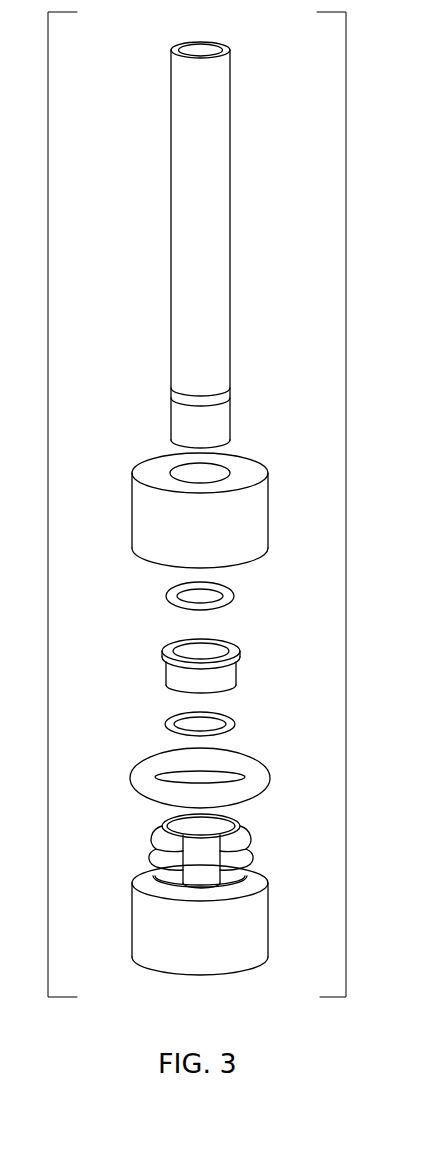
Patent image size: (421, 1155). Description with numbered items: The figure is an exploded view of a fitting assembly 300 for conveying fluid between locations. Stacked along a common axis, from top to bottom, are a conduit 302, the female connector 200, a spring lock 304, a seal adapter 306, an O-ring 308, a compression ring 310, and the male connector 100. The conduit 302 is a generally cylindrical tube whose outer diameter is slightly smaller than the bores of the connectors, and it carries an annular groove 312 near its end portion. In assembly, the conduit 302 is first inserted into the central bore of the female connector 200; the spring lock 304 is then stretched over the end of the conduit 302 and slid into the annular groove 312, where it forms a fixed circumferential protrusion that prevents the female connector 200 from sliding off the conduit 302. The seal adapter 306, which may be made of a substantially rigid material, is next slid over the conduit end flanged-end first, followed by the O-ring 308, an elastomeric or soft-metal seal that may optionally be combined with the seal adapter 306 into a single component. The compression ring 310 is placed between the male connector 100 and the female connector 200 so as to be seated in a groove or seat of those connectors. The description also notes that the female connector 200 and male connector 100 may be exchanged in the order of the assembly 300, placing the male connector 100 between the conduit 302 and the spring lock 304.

The fitting assembly 300 is at (131, 74).
The conduit 302 is at (230, 262).
The annular groove 312 is at (230, 390).
The female connector 200 is at (155, 453).
The spring lock 304 is at (167, 601).
The seal adapter 306 is at (240, 651).
The O-ring 308 is at (231, 717).
The compression ring 310 is at (258, 758).
The male connector 100 is at (140, 863).